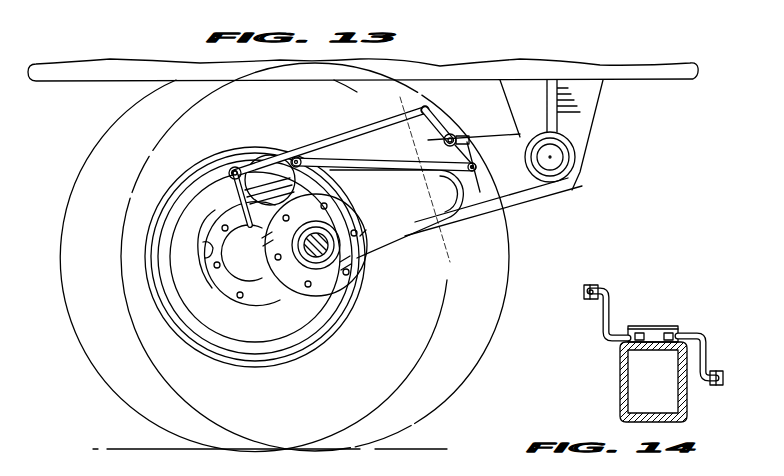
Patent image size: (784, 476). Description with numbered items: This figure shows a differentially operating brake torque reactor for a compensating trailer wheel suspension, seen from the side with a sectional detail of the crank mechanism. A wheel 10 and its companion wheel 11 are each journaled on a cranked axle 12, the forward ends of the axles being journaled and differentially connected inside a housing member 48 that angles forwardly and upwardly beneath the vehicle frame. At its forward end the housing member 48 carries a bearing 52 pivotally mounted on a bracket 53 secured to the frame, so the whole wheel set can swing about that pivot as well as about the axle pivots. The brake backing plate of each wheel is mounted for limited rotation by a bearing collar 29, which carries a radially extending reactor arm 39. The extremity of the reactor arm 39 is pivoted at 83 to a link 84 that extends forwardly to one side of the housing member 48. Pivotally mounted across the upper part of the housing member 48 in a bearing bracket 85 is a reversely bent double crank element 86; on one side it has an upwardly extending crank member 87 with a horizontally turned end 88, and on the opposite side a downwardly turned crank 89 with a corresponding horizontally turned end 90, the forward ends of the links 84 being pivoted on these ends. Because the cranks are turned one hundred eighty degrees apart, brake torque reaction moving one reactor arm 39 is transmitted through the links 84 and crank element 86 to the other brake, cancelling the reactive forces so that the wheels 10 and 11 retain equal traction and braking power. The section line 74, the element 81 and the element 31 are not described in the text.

In FIG. 13, the wheel 10 is at (130, 410).
In FIG. 13, the wheel 11 is at (445, 408).
In FIG. 13, the cranked axle 12 is at (216, 266).
In FIG. 13, the bearing collar 29 is at (298, 298).
In FIG. 13, the brake caliper 31 is at (207, 250).
In FIG. 13, the reactor arm 39 is at (293, 182).
In FIG. 13, the housing member 48 is at (518, 200).
In FIG. 14, the housing member 48 is at (620, 390).
In FIG. 13, the bearing 52 is at (581, 150).
In FIG. 13, the bracket 53 is at (586, 110).
In FIG. 13, the section line 74 is at (401, 95).
In FIG. 13, the link 81 is at (441, 114).
In FIG. 13, the pivot 83 is at (253, 157).
In FIG. 13, the link 84 is at (354, 158).
In FIG. 14, the link 84 is at (596, 287).
In FIG. 13, the bearing bracket 85 is at (462, 136).
In FIG. 14, the bearing bracket 85 is at (655, 327).
In FIG. 13, the double crank element 86 is at (456, 126).
In FIG. 14, the double crank element 86 is at (605, 341).
In FIG. 14, the crank member 87 is at (610, 301).
In FIG. 14, the horizontally turned end 88 is at (584, 294).
In FIG. 13, the crank 89 is at (480, 152).
In FIG. 14, the crank 89 is at (706, 345).
In FIG. 13, the horizontally turned end 90 is at (473, 173).
In FIG. 14, the horizontally turned end 90 is at (724, 378).